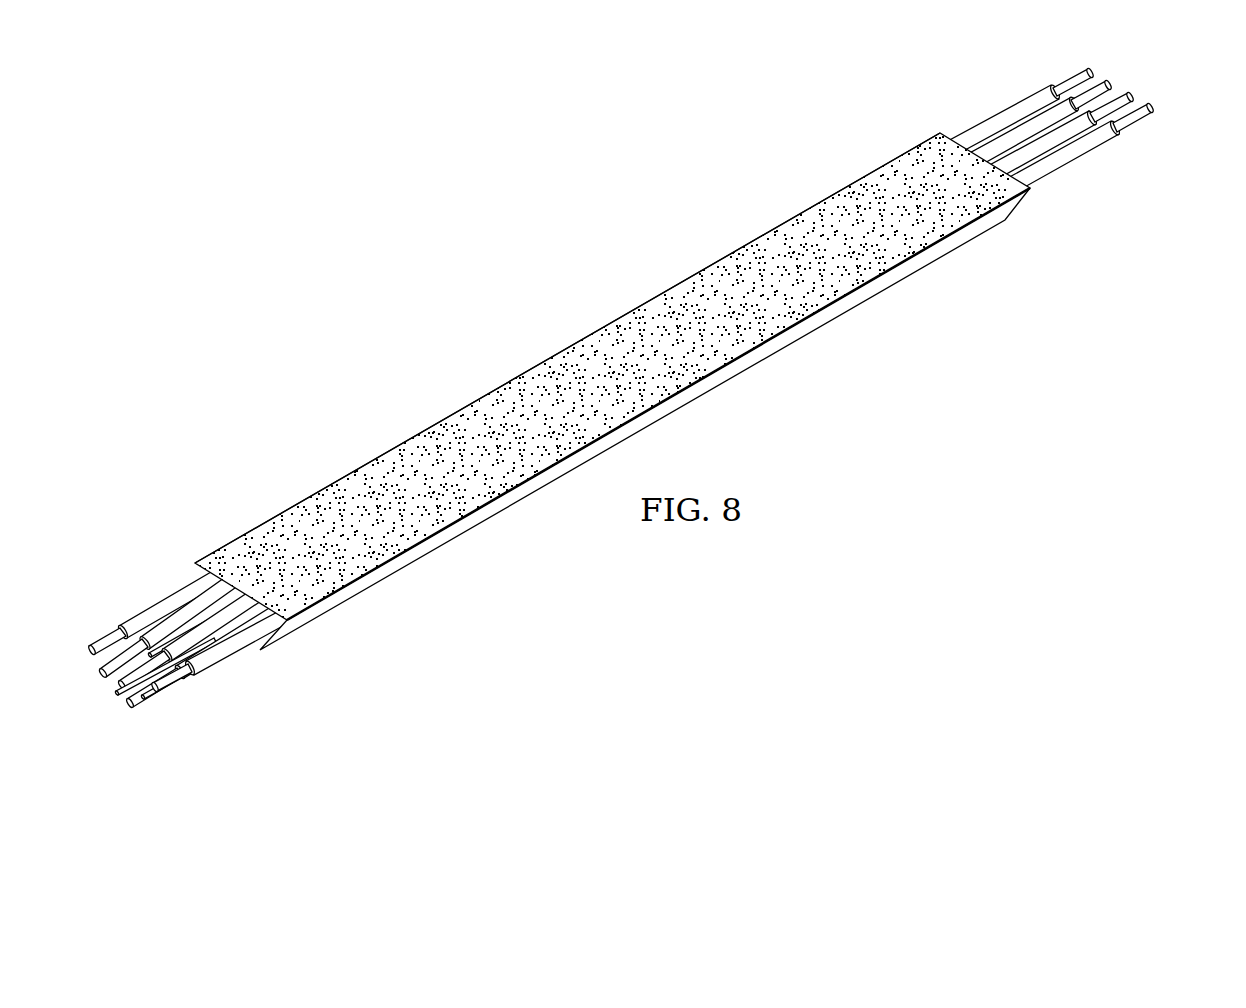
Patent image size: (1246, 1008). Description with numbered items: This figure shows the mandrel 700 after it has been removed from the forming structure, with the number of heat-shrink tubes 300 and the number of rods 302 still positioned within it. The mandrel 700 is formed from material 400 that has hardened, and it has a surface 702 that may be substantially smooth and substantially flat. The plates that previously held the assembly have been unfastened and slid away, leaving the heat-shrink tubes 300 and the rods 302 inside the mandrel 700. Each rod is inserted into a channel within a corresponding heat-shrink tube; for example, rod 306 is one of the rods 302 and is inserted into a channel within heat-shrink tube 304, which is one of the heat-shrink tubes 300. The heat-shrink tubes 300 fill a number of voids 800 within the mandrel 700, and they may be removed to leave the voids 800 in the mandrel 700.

The number of heat-shrink tubes 300 is at (1086, 119).
The number of rods 302 is at (1092, 69).
The heat-shrink tube 304 is at (1070, 174).
The rod 306 is at (1152, 106).
The material 400 is at (612, 417).
The mandrel 700 is at (612, 376).
The surface 702 is at (417, 439).
The number of voids 800 is at (283, 628).